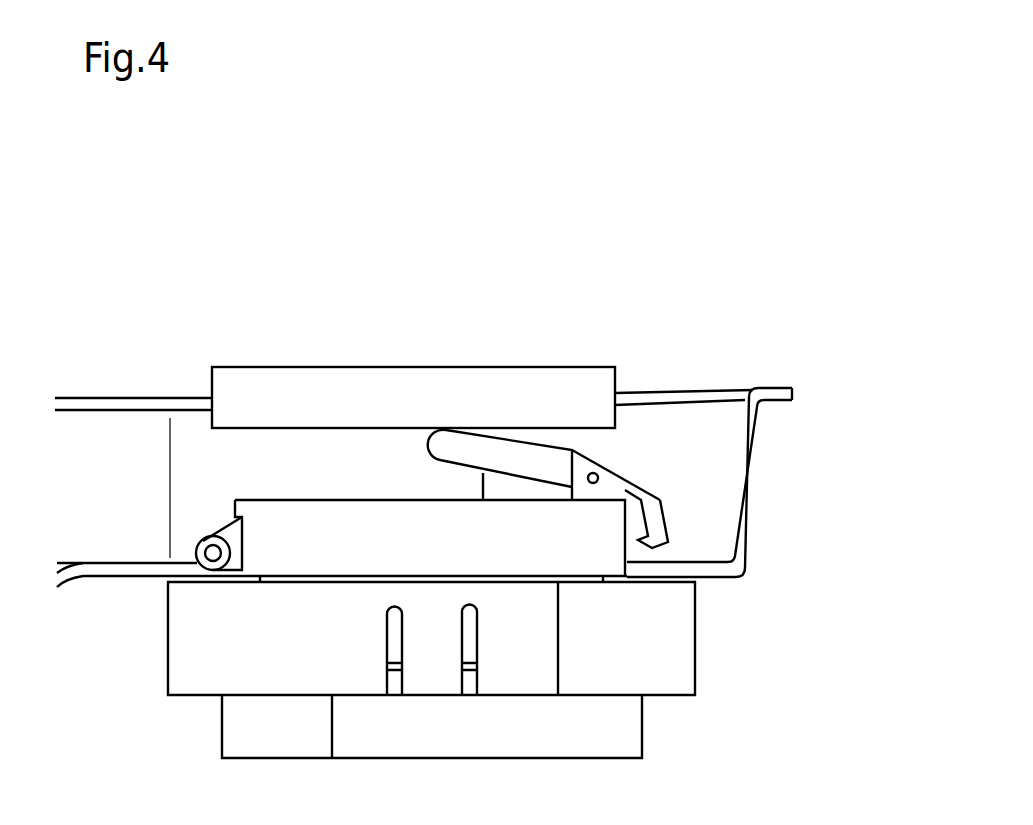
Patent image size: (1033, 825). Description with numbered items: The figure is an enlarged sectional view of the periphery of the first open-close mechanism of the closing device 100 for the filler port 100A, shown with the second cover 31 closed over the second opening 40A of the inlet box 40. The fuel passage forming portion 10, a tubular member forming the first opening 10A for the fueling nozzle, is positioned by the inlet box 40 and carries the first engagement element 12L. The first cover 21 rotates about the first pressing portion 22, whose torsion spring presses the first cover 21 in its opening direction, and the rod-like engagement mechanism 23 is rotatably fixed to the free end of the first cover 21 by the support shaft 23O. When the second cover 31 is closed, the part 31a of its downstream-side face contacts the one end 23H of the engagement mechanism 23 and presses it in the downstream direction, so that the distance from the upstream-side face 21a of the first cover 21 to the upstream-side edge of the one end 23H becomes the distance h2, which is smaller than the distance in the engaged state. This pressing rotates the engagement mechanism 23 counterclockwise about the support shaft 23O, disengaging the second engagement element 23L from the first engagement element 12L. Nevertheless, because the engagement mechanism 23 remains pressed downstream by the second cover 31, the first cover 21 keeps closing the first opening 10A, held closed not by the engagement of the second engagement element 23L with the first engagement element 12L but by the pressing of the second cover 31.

The fuel passage forming portion 10 is at (695, 662).
The first opening 10A is at (370, 575).
The first engagement element 12L is at (626, 544).
The first cover 21 is at (400, 513).
The upstream-side face of the first cover 21a is at (373, 498).
The first pressing portion 22 is at (197, 540).
The engagement mechanism 23 is at (663, 308).
The one end of the engagement mechanism 23H is at (448, 428).
The support shaft 23O is at (597, 471).
The second engagement element 23L is at (638, 495).
The second cover 31 is at (333, 367).
The part of a downstream-side face of the second cover 31a is at (443, 428).
The inlet box 40 is at (755, 473).
The second opening 40A is at (746, 390).
The closing device 100 is at (710, 282).
The filler port 100A is at (687, 417).
The distance h2 is at (418, 429).